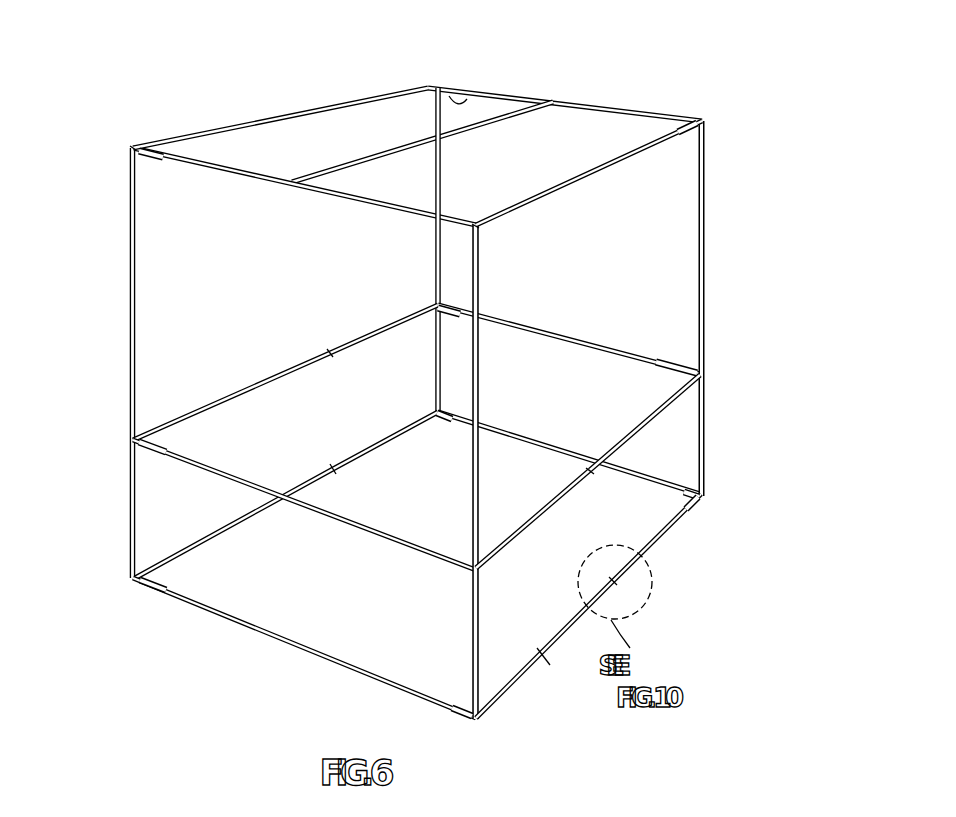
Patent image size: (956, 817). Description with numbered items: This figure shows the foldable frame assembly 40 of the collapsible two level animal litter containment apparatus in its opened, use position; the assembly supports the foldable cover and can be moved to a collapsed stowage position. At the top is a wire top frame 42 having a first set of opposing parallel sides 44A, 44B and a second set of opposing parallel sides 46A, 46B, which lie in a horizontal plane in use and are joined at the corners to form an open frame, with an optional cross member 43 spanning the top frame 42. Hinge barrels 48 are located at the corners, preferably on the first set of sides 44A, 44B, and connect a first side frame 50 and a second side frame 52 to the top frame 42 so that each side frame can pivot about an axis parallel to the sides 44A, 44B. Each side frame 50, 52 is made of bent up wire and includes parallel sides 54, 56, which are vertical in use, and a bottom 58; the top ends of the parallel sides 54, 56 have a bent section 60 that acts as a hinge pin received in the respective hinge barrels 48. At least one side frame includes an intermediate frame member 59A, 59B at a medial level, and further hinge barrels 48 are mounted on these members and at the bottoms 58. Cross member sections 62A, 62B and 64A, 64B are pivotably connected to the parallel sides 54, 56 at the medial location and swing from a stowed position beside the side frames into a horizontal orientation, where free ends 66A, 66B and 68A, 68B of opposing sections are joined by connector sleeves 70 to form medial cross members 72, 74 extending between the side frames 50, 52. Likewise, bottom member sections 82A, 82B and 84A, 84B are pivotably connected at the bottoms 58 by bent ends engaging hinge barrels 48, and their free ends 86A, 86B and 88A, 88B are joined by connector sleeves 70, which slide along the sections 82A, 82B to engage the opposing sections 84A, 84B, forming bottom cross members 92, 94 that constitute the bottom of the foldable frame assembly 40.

The foldable frame assembly 40 is at (400, 50).
The top frame 42 is at (634, 108).
The cross member 43 is at (497, 118).
The first set opposing parallel side 44A is at (605, 102).
The first set opposing parallel side 44B is at (243, 168).
The second set opposing parallel side 46A is at (586, 172).
The second set opposing parallel side 46B is at (308, 110).
The hinge barrel 48 is at (466, 97).
The first side frame 50 is at (714, 286).
The second side frame 52 is at (126, 257).
The parallel side 54 is at (706, 180).
The parallel side 56 is at (442, 172).
The bottom 58 is at (292, 645).
The intermediate frame member 59A is at (540, 330).
The intermediate frame member 59B is at (178, 472).
The bent section 60 is at (128, 146).
The cross member section 62A is at (690, 390).
The cross member section 62B is at (399, 318).
The cross member section 64A is at (510, 538).
The cross member section 64B is at (237, 390).
The free end 66A is at (606, 452).
The free end 66B is at (363, 340).
The free end 68A is at (578, 484).
The free end 68B is at (283, 380).
The connector sleeve 70 is at (326, 352).
The medial cross member 72 is at (647, 442).
The medial cross member 74 is at (357, 328).
The bottom member section 82A is at (684, 530).
The bottom member section 82B is at (446, 418).
The bottom member section 84A is at (541, 655).
The bottom member section 84B is at (242, 524).
The free end 86A is at (633, 576).
The free end 86B is at (348, 457).
The free end 88A is at (613, 603).
The free end 88B is at (337, 476).
The bottom cross member 92 is at (506, 682).
The bottom cross member 94 is at (248, 498).